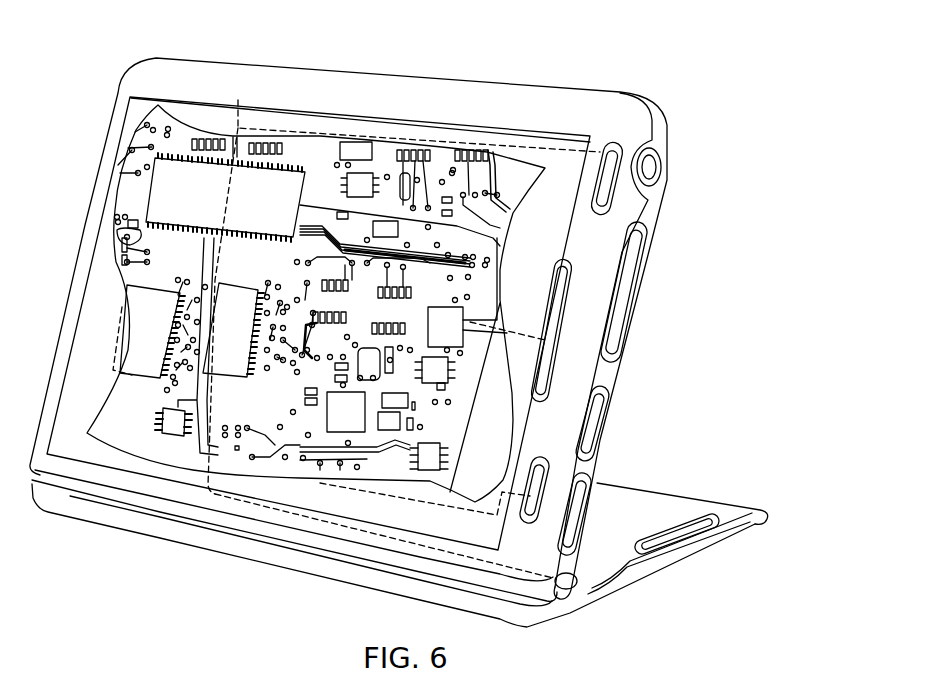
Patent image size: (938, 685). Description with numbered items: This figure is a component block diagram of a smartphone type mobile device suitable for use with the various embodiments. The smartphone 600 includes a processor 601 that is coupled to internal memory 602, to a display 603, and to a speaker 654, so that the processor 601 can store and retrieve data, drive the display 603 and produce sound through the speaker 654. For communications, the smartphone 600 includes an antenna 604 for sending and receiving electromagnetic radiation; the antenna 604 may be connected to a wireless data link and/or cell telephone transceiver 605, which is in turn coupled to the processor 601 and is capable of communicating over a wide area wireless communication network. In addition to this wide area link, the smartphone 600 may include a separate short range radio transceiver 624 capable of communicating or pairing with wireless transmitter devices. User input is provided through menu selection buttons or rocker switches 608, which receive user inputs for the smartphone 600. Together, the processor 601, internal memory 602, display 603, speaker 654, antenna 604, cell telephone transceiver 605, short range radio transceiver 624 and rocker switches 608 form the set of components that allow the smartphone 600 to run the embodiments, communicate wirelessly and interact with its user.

The smartphone 600 is at (623, 93).
The processor 601 is at (241, 205).
The internal memory 602 is at (164, 316).
The display 603 is at (462, 121).
The antenna 604 is at (577, 590).
The cell telephone transceiver 605 is at (251, 330).
The menu selection buttons or rocker switches 608 is at (610, 181).
The short range radio transceiver 624 is at (176, 424).
The speaker 654 is at (574, 264).